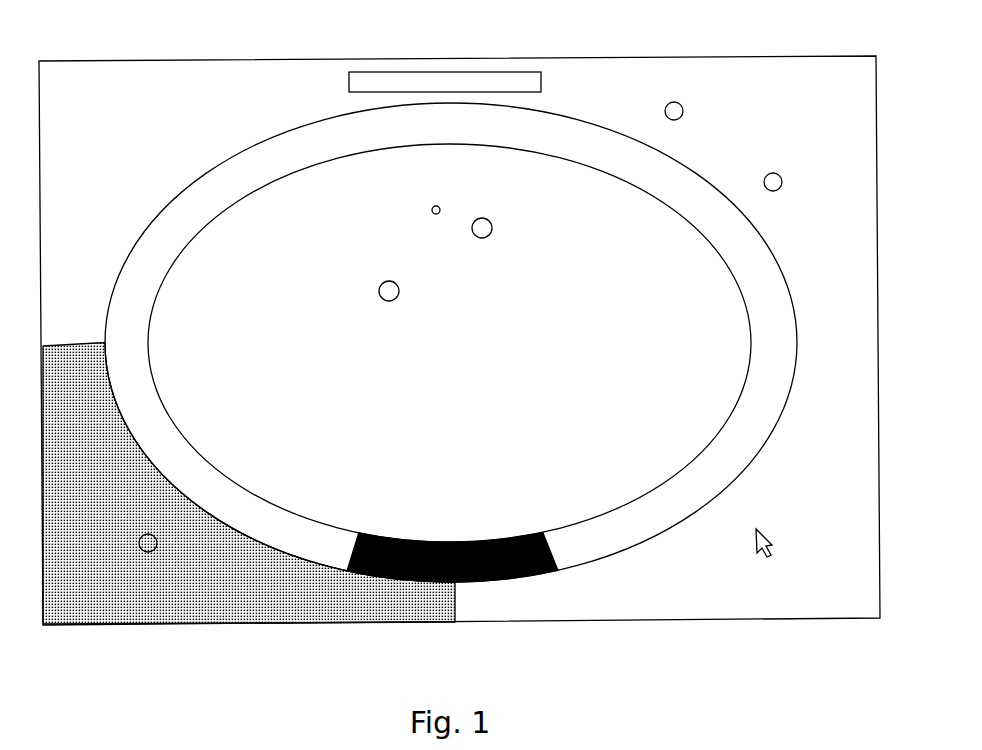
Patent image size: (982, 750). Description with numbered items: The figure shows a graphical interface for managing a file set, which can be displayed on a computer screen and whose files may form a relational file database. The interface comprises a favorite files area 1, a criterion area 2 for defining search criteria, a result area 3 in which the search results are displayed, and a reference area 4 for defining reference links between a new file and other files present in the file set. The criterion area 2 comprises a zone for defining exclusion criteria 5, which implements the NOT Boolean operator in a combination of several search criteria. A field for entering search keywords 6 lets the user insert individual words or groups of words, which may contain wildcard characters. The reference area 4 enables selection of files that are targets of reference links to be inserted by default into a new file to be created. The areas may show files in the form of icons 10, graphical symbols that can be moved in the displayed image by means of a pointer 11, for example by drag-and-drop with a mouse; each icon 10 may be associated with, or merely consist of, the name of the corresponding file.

The favorite files area 1 is at (838, 607).
The criterion area 2 is at (663, 518).
The result area 3 is at (575, 510).
The reference area 4 is at (235, 595).
The zone for defining exclusion criteria 5 is at (510, 575).
The field for entering search keywords 6 is at (399, 85).
The icons 10 is at (482, 218).
The pointer 11 is at (763, 556).